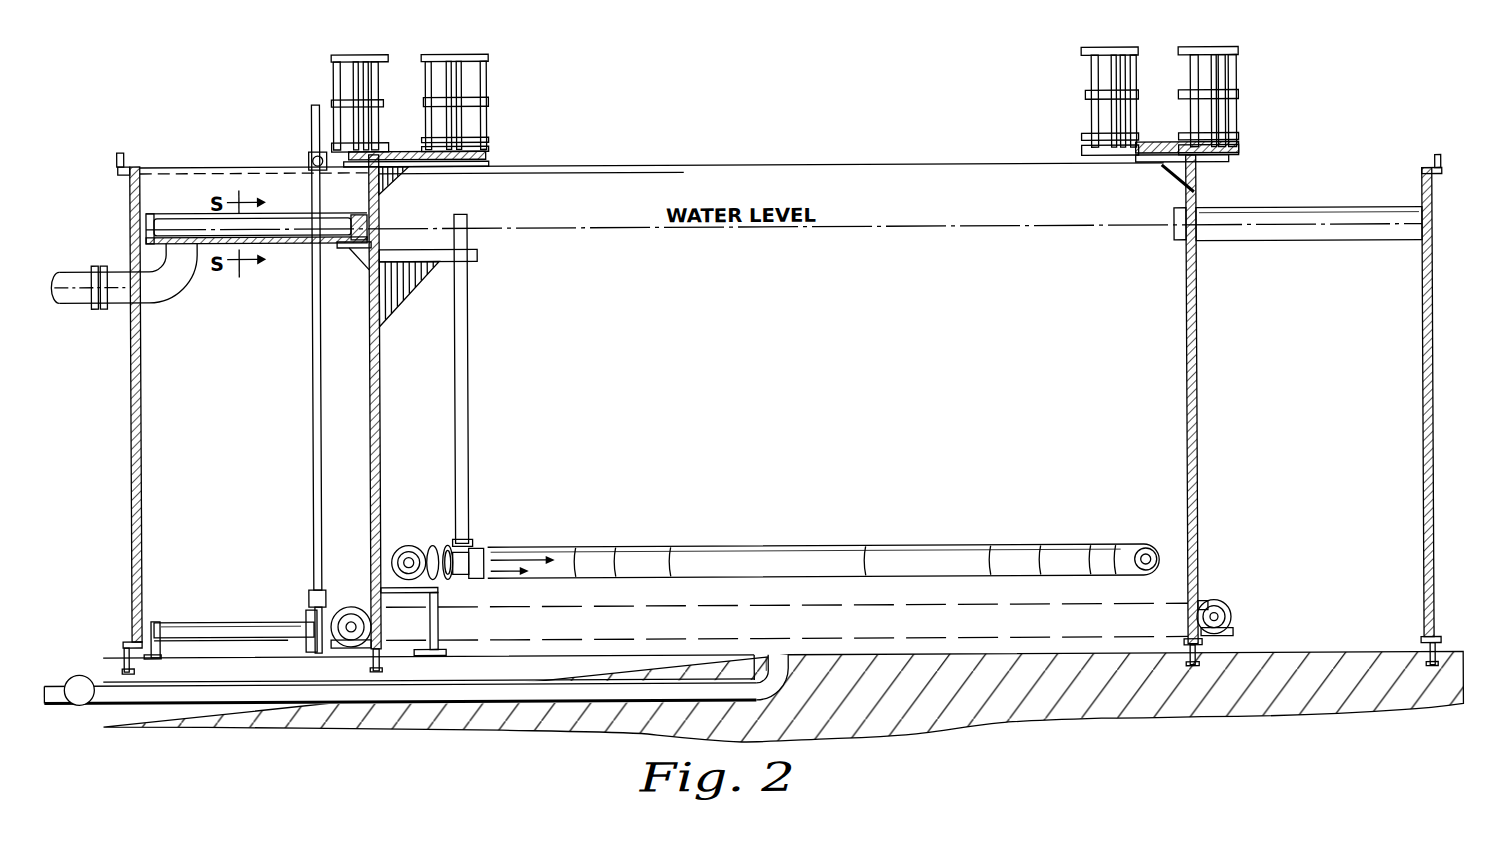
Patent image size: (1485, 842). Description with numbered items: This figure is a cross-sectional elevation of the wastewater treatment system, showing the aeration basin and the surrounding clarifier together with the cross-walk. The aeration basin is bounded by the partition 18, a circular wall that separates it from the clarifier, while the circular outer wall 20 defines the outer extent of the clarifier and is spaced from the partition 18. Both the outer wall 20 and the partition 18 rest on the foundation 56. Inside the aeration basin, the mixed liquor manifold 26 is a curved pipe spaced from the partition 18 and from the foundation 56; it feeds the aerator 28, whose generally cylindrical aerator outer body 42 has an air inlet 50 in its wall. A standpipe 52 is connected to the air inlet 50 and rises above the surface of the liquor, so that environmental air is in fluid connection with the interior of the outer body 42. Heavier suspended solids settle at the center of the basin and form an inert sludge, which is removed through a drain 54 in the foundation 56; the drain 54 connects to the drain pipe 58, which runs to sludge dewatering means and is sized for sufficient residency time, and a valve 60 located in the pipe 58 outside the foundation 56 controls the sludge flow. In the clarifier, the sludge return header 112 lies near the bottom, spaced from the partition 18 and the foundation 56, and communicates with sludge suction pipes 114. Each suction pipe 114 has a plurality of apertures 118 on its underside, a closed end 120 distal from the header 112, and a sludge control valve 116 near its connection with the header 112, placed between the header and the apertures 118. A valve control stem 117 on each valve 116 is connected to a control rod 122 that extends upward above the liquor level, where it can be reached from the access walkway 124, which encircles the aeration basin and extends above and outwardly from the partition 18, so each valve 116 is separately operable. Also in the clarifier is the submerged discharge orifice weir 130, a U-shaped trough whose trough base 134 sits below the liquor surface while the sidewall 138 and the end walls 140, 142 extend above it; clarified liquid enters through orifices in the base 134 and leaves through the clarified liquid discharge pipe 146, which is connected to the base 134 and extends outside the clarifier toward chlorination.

The partition 18 is at (380, 211).
The outer wall 20 is at (131, 198).
The mixed liquor manifold 26 is at (1040, 527).
The aerator 28 is at (477, 551).
The aerator outer body 42 is at (457, 578).
The air inlet 50 is at (447, 546).
The standpipe 52 is at (468, 404).
The drain 54 is at (790, 659).
The foundation 56 is at (1427, 705).
The drain pipe 58 is at (713, 701).
The valve 60 is at (85, 672).
The sludge return header 112 is at (336, 608).
The sludge suction pipe 114 is at (233, 589).
The sludge control valve 116 is at (306, 611).
The valve control stem 117 is at (311, 591).
The apertures 118 is at (197, 620).
The closed end 120 is at (183, 605).
The control rod 122 is at (313, 406).
The access walkway 124 is at (333, 66).
The submerged discharge orifice weir 130 is at (259, 217).
The trough base 134 is at (295, 243).
The trough sidewall 138 is at (307, 204).
The trough end wall 140 is at (165, 216).
The trough end wall 142 is at (364, 204).
The clarified liquid discharge pipe 146 is at (176, 291).